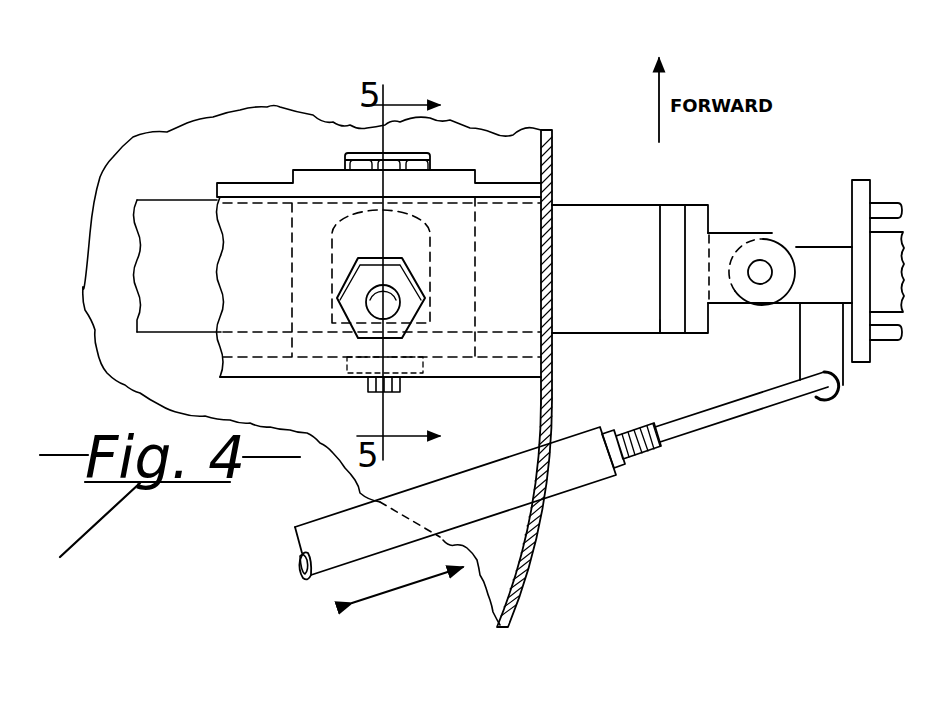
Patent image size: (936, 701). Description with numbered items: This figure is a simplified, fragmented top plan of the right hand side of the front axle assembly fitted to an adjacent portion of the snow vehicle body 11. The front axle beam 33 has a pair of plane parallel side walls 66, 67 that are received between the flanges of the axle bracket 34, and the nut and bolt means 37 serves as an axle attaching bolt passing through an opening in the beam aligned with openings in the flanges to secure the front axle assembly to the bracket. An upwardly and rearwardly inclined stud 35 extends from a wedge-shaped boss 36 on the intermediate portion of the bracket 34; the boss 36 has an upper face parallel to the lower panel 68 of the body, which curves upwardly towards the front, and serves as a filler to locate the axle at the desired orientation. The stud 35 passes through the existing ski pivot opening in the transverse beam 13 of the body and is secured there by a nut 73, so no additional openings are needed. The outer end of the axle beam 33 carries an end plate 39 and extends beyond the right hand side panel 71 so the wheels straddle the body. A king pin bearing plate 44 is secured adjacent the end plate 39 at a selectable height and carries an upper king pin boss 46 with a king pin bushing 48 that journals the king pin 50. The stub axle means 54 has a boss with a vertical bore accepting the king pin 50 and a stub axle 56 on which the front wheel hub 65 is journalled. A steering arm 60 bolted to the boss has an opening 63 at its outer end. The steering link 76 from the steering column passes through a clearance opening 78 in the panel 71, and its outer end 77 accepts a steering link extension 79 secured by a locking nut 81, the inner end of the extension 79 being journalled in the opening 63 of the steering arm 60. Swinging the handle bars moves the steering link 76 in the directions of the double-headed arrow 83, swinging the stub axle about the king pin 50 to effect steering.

The body 11 is at (506, 124).
The transverse beam 13 is at (262, 362).
The front axle beam 33 is at (601, 320).
The axle bracket 34 is at (313, 178).
The stud 35 is at (390, 302).
The wedge-shaped boss 36 is at (430, 237).
The nut and bolt means 37 is at (413, 158).
The end plate 39 is at (668, 217).
The king pin bearing plate 44 is at (708, 347).
The upper king pin boss 46 is at (733, 300).
The king pin bushing 48 is at (781, 252).
The king pin 50 is at (758, 264).
The stub axle means 54 is at (807, 237).
The stub axle 56 is at (836, 257).
The steering arm 60 is at (816, 367).
The opening 63 is at (846, 388).
The front wheel hub 65 is at (869, 188).
The side wall 66 is at (577, 203).
The side wall 67 is at (638, 334).
The lower panel 68 is at (162, 387).
The right hand side panel 71 is at (552, 378).
The nut 73 is at (375, 258).
The steering link 76 is at (355, 520).
The outer end 77 is at (565, 488).
The clearance opening 78 is at (552, 412).
The steering link extension 79 is at (758, 408).
The locking nut 81 is at (618, 429).
The double-headed arrow 83 is at (387, 595).